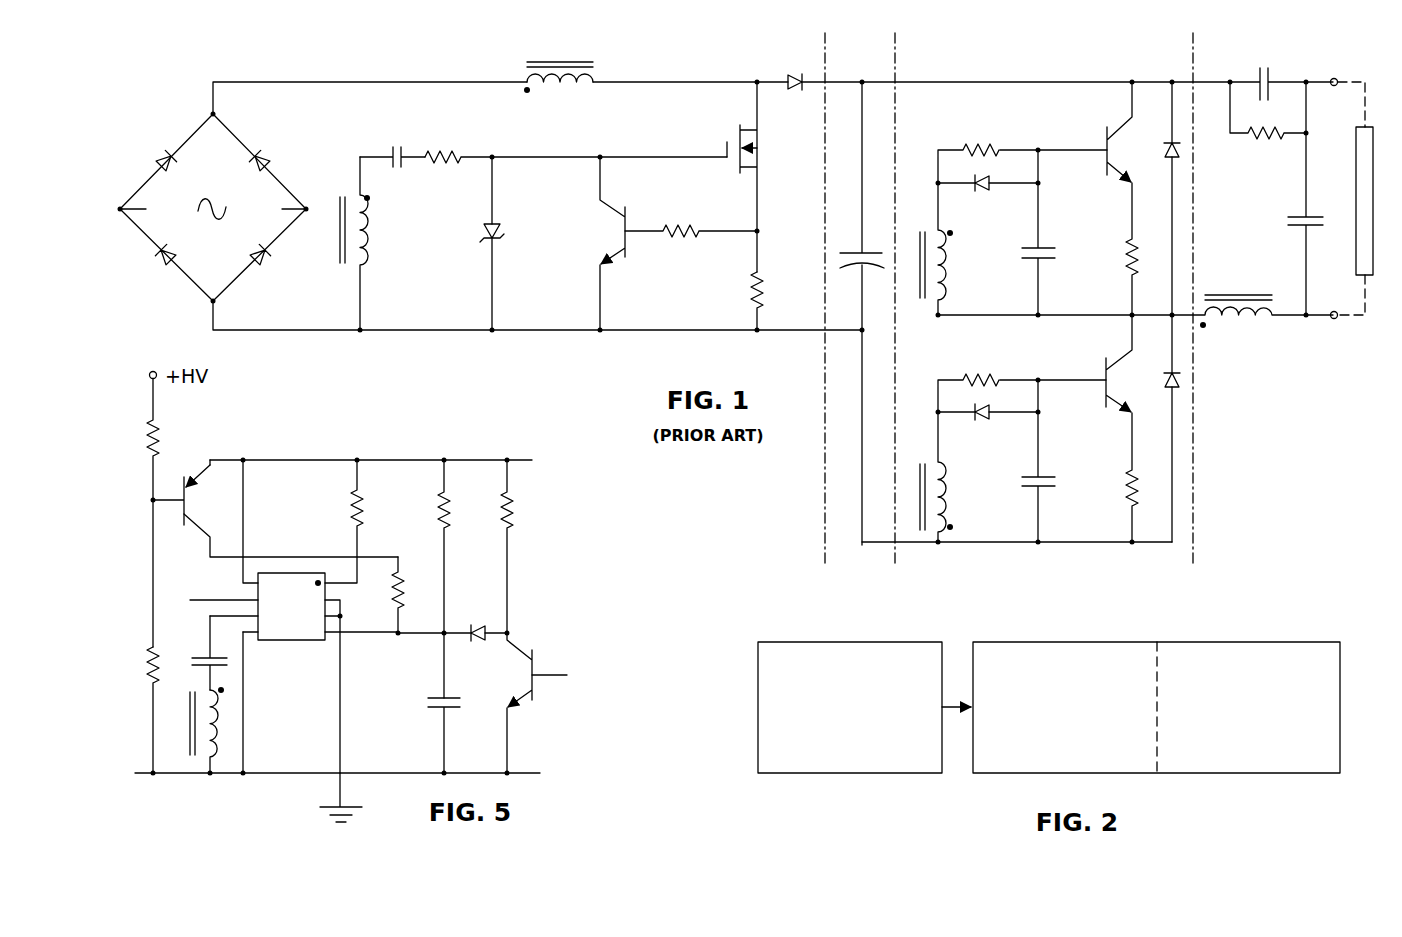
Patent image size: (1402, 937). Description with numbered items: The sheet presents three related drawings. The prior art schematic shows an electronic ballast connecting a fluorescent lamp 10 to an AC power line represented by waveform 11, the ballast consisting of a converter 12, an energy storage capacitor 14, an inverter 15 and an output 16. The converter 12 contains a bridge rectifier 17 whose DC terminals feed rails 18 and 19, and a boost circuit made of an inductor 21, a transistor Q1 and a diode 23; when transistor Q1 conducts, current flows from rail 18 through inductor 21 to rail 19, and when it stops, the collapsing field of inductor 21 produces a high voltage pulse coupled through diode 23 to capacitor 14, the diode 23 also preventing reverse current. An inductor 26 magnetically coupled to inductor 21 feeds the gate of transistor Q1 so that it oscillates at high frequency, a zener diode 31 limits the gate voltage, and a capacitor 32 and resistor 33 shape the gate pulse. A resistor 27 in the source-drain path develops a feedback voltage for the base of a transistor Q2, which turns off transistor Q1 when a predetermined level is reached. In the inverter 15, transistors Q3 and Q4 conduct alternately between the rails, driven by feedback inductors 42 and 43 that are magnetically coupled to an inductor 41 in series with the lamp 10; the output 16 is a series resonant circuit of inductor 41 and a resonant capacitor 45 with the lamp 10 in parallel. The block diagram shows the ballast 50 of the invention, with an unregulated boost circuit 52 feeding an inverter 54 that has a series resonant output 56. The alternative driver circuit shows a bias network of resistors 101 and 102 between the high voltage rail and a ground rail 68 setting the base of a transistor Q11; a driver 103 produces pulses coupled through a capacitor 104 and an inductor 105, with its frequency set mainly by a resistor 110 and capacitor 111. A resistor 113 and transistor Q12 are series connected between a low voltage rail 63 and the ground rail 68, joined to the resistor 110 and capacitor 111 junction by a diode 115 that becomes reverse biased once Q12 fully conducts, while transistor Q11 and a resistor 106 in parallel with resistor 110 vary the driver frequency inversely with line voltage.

In FIG. 1, the fluorescent lamp 10 is at (1356, 192).
In FIG. 1, the waveform 11 is at (204, 218).
In FIG. 1, the converter 12 is at (666, 58).
In FIG. 1, the energy storage capacitor 14 is at (864, 48).
In FIG. 1, the inverter 15 is at (1030, 58).
In FIG. 1, the output 16 is at (1287, 57).
In FIG. 1, the bridge rectifier 17 is at (254, 137).
In FIG. 1, the rail 18 is at (244, 82).
In FIG. 1, the rail 19 is at (240, 330).
In FIG. 1, the inductor 21 is at (548, 62).
In FIG. 1, the diode 23 is at (798, 70).
In FIG. 1, the inductor 26 is at (362, 247).
In FIG. 1, the resistor 27 is at (749, 288).
In FIG. 1, the zener diode 31 is at (500, 220).
In FIG. 1, the capacitor 32 is at (392, 140).
In FIG. 1, the resistor 33 is at (450, 150).
In FIG. 1, the inductor 41 is at (1232, 326).
In FIG. 1, the inductor 42 is at (942, 258).
In FIG. 1, the inductor 43 is at (945, 500).
In FIG. 1, the resonant capacitor 45 is at (1281, 220).
In FIG. 2, the ballast 50 is at (1259, 604).
In FIG. 2, the unregulated boost circuit 52 is at (831, 642).
In FIG. 2, the inverter 54 is at (1033, 642).
In FIG. 2, the series resonant output 56 is at (1268, 642).
In FIG. 5, the low voltage rail 63 is at (300, 460).
In FIG. 5, the ground rail 68 is at (535, 773).
In FIG. 5, the resistor 101 is at (159, 447).
In FIG. 5, the resistor 102 is at (163, 657).
In FIG. 5, the driver 103 is at (282, 641).
In FIG. 5, the capacitor 104 is at (233, 661).
In FIG. 5, the inductor 105 is at (216, 716).
In FIG. 5, the resistor 106 is at (404, 580).
In FIG. 5, the resistor 110 is at (438, 500).
In FIG. 5, the capacitor 111 is at (423, 699).
In FIG. 5, the resistor 113 is at (514, 520).
In FIG. 5, the diode 115 is at (472, 620).
In FIG. 1, the transistor Q1 is at (762, 145).
In FIG. 1, the transistor Q2 is at (614, 228).
In FIG. 1, the transistor Q3 is at (1110, 150).
In FIG. 1, the transistor Q4 is at (1110, 380).
In FIG. 5, the transistor Q11 is at (275, 508).
In FIG. 5, the transistor Q12 is at (526, 704).